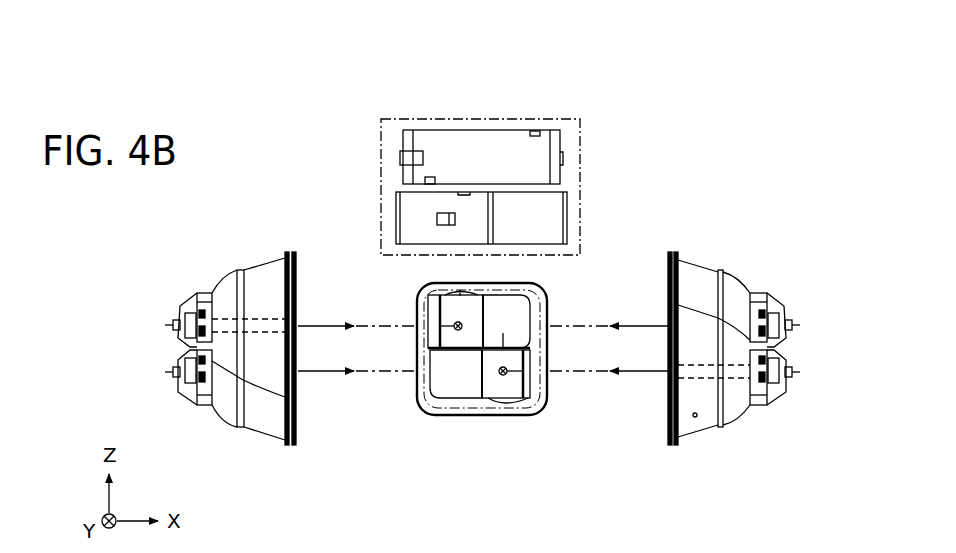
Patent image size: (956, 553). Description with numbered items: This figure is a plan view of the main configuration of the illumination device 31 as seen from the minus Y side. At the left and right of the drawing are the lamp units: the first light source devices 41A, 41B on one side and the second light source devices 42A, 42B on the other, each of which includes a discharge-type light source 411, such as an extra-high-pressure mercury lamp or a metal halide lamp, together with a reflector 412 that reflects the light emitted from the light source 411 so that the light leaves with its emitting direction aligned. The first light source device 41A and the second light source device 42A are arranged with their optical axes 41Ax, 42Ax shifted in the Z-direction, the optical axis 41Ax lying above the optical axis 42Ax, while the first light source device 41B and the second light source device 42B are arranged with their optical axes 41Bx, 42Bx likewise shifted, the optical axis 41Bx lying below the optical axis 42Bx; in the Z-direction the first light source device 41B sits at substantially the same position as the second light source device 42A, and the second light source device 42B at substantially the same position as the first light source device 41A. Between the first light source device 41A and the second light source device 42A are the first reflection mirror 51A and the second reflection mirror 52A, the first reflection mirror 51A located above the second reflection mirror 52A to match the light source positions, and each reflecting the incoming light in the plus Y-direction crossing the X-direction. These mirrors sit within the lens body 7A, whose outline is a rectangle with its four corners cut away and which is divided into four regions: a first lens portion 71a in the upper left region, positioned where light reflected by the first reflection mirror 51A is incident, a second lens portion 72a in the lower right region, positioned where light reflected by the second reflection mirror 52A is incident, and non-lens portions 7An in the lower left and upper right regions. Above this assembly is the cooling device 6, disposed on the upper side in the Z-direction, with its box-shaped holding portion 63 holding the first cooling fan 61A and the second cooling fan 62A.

The illumination device 31 is at (657, 82).
The cooling device 6 is at (511, 158).
The holding portion 63 is at (581, 130).
The first cooling fan 61A is at (437, 138).
The second cooling fan 62A is at (563, 223).
The reflector 412 is at (263, 273).
The light source 411 is at (268, 327).
The first light source device 41A is at (198, 272).
The first light source device 41B is at (198, 429).
The second light source device 42A is at (769, 429).
The second light source device 42B is at (769, 274).
The optical axis 41Ax is at (323, 325).
The optical axis 41Bx is at (323, 375).
The optical axis 42Ax is at (647, 373).
The optical axis 42Bx is at (593, 323).
The lens body 7A is at (479, 365).
The non-lens portion 7An is at (518, 323).
The first reflection mirror 51A is at (448, 310).
The second reflection mirror 52A is at (537, 398).
The first lens portion 71a is at (461, 293).
The second lens portion 72a is at (507, 403).